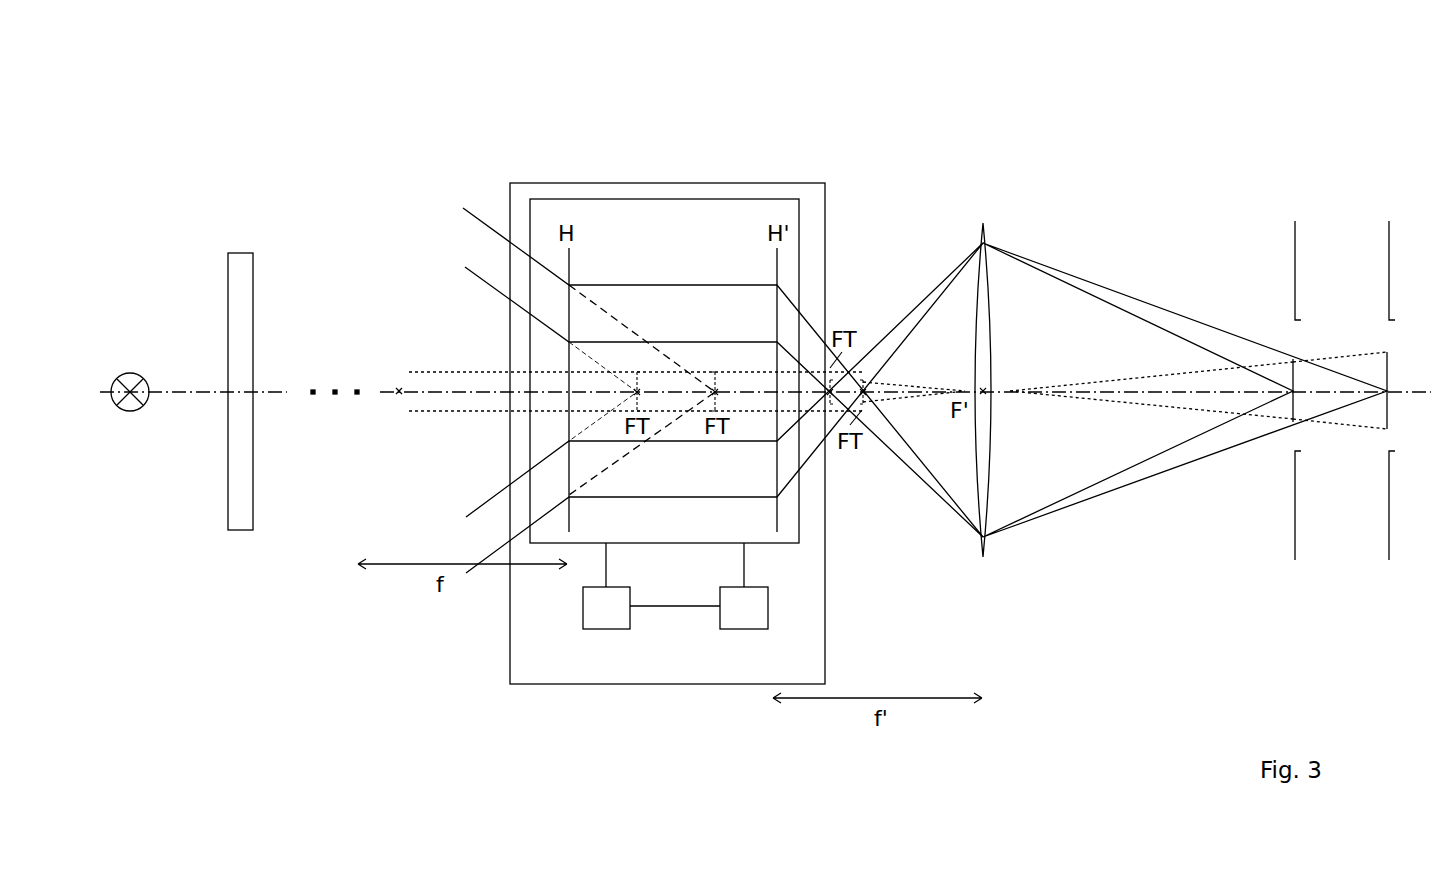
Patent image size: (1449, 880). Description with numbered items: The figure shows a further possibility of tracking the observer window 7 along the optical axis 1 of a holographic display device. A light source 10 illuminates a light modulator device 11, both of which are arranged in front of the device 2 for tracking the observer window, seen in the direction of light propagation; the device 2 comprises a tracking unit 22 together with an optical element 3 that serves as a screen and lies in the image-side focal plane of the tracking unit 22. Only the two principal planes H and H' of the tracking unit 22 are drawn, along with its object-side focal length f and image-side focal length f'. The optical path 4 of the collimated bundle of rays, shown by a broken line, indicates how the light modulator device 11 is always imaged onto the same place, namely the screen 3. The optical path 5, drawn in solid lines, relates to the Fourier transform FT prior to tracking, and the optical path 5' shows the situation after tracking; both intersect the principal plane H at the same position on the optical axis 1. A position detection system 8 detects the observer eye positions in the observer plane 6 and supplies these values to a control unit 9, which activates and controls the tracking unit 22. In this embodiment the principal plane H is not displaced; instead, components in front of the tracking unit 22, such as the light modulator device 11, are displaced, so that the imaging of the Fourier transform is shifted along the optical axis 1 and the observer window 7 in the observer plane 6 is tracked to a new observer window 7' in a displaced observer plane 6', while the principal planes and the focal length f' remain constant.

The optical axis 1 is at (182, 393).
The light source 10 is at (122, 372).
The light modulator device 11 is at (235, 260).
The optical path of the collimated bundle of rays 4 is at (432, 370).
The optical path relating to the Fourier transform 5 is at (680, 321).
The optical path after tracking 5' is at (715, 310).
The device for tracking the observer window 2 is at (733, 183).
The tracking unit 22 is at (743, 225).
The control unit 9 is at (606, 586).
The position detection system 8 is at (744, 586).
The optical element serving as screen 3 is at (988, 235).
The observer window 7 is at (1318, 349).
The new observer window 7' is at (1414, 349).
The observer plane 6 is at (1298, 411).
The displaced observer plane 6' is at (1393, 411).